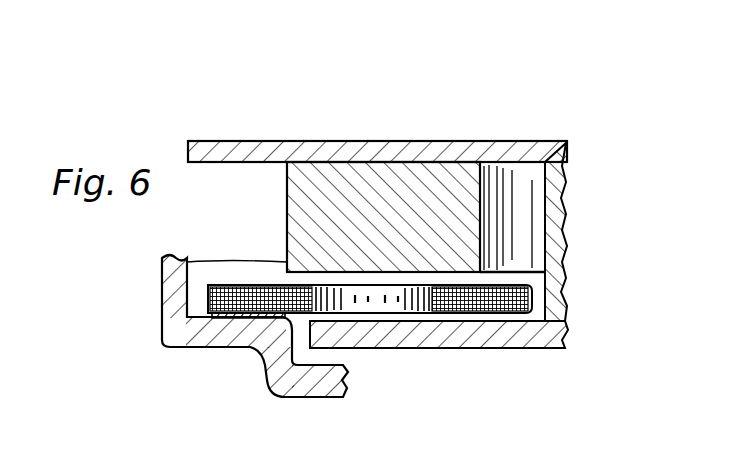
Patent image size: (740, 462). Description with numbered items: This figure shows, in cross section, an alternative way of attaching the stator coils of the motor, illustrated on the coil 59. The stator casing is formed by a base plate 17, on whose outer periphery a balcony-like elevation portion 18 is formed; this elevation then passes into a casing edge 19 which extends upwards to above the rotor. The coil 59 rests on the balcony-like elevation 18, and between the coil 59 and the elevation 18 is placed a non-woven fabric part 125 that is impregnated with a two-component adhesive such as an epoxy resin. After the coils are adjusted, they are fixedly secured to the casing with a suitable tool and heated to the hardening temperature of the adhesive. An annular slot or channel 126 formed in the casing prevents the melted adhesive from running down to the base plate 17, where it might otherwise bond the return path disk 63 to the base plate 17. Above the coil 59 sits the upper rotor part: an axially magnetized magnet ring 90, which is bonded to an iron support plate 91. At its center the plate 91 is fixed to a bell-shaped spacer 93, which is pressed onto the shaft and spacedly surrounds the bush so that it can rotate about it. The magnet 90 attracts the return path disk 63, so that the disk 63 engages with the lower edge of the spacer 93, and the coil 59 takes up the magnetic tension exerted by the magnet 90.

The iron support plate 91 is at (332, 141).
The axially magnetized magnet ring 90 is at (293, 202).
The bell-shaped spacer 93 is at (561, 238).
The return path disk 63 is at (458, 338).
The coil 59 is at (232, 290).
The non-woven fabric part 125 is at (212, 318).
The balcony-like elevation portion 18 is at (232, 338).
The casing edge 19 is at (163, 290).
The annular slot or channel 126 is at (263, 358).
The base plate 17 is at (325, 392).